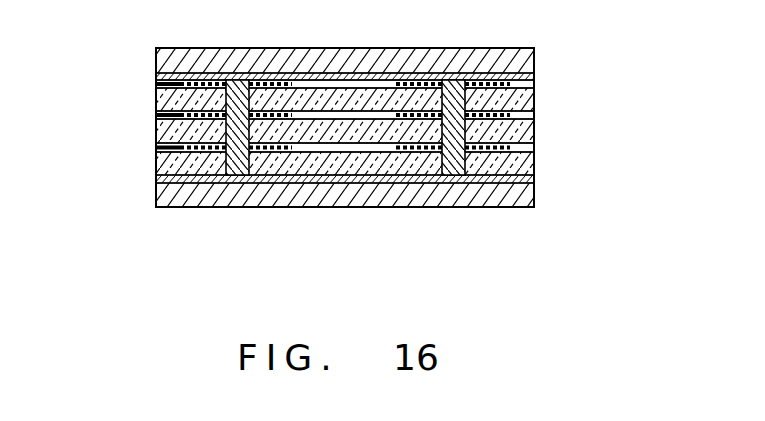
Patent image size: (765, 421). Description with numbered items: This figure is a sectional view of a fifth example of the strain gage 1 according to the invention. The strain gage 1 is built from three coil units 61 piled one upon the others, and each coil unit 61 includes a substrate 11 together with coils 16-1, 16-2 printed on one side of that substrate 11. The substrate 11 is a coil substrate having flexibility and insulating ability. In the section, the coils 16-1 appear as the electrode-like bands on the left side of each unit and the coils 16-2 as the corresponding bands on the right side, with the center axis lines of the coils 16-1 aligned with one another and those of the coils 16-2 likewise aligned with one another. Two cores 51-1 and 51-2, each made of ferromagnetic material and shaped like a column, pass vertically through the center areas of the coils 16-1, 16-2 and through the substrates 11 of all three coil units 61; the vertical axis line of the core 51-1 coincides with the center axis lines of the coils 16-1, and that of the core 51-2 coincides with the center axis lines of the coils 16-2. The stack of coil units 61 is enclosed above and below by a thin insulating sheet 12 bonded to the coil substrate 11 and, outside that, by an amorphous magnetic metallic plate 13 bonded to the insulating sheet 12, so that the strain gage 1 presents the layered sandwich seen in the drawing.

The strain gage 1 is at (625, 218).
The coil substrate 11 is at (535, 95).
The thin insulating sheet 12 is at (333, 76).
The amorphous magnetic metallic plate 13 is at (392, 52).
The coil 16-1 is at (193, 81).
The coil 16-2 is at (490, 82).
The core 51-1 is at (235, 80).
The core 51-2 is at (455, 80).
The coil unit 61 is at (132, 93).